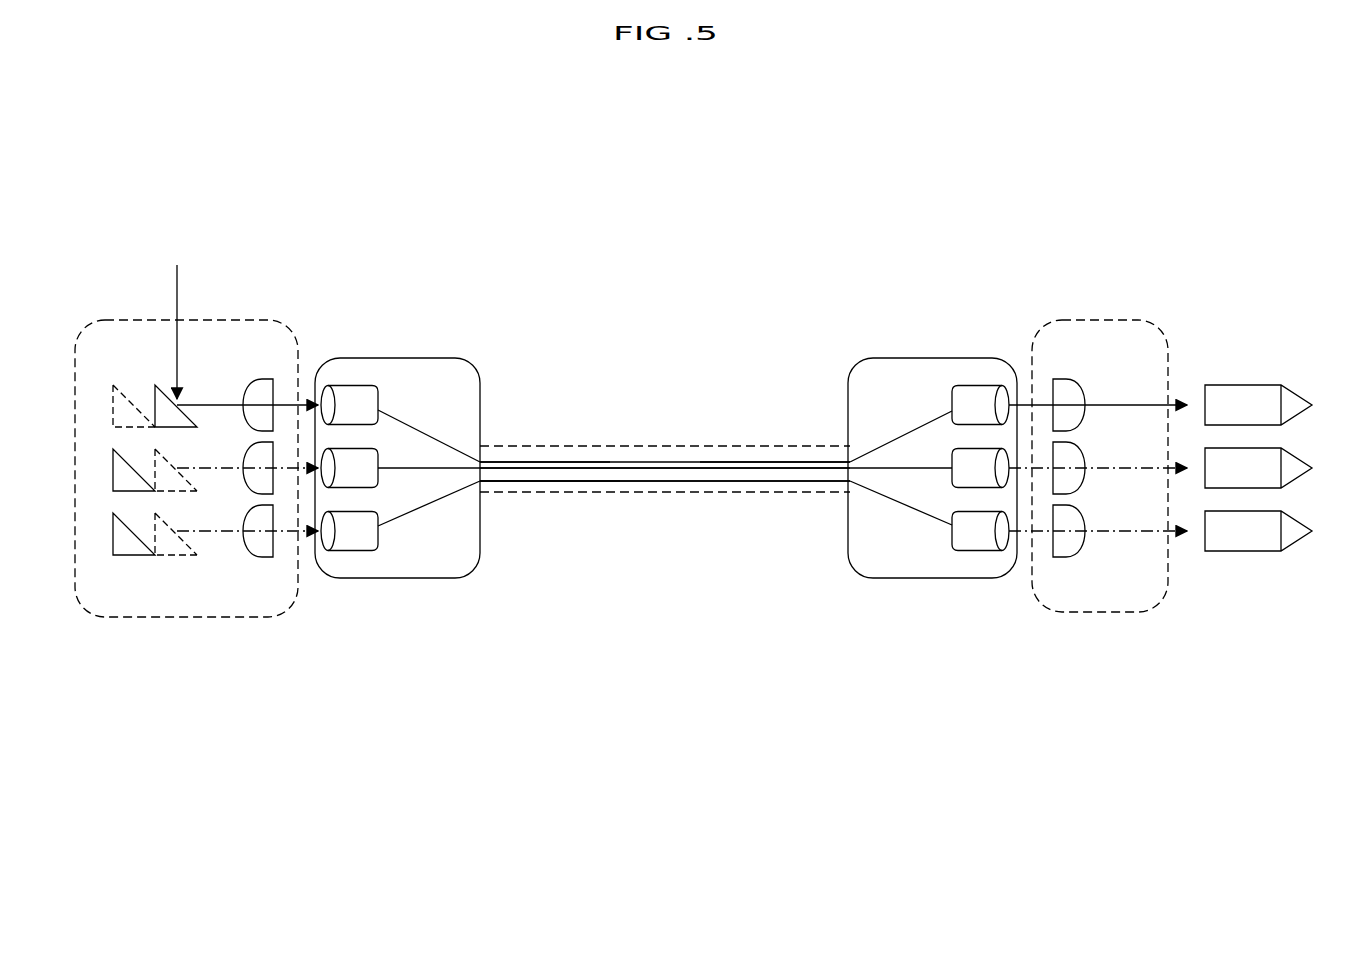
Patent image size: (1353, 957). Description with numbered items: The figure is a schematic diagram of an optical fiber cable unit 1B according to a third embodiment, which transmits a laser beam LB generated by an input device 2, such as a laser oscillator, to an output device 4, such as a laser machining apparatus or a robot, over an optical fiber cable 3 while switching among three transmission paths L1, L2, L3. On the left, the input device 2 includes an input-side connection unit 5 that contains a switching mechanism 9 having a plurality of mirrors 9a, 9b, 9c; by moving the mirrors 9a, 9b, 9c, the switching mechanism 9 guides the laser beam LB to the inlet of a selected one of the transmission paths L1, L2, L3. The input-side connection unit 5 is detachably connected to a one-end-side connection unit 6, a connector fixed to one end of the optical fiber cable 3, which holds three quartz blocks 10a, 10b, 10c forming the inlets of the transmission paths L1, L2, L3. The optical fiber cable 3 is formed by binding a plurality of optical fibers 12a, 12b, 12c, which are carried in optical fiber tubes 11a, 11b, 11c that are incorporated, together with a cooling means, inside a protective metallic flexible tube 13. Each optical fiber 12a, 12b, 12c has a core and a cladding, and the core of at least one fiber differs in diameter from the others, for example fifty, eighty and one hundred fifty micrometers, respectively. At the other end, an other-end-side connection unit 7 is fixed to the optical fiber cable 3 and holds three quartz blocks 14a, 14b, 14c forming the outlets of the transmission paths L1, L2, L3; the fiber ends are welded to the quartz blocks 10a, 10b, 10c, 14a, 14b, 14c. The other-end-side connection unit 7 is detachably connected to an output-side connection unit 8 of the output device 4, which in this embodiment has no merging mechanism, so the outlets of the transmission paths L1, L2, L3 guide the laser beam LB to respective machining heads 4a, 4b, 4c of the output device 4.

The optical fiber cable unit 1B is at (1081, 194).
The input device 2 is at (193, 315).
The input-side connection unit 5 is at (259, 318).
The switching mechanism 9 is at (185, 469).
The mirror 9a is at (162, 391).
The mirror 9b is at (128, 459).
The mirror 9c is at (128, 523).
The one-end-side connection unit 6 is at (419, 357).
The quartz block 10a is at (371, 394).
The quartz block 10b is at (371, 457).
The quartz block 10c is at (371, 543).
The optical fiber cable 3 is at (665, 485).
The optical fiber tube 11a is at (520, 446).
The optical fiber tube 11b is at (721, 467).
The optical fiber tube 11c is at (627, 482).
The optical fiber 12a is at (570, 461).
The optical fiber 12b is at (773, 467).
The optical fiber 12c is at (697, 482).
The protective metallic flexible tube 13 is at (758, 493).
The transmission path L1 is at (610, 456).
The transmission path L2 is at (816, 461).
The transmission path L3 is at (569, 487).
The other-end-side connection unit 7 is at (939, 357).
The quartz block 14a is at (955, 395).
The quartz block 14b is at (955, 460).
The quartz block 14c is at (955, 542).
The output-side connection unit 8 is at (1143, 318).
The output device 4 is at (1097, 315).
The machining head 4a is at (1288, 393).
The machining head 4b is at (1288, 456).
The machining head 4c is at (1288, 519).
The laser beam LB is at (177, 292).